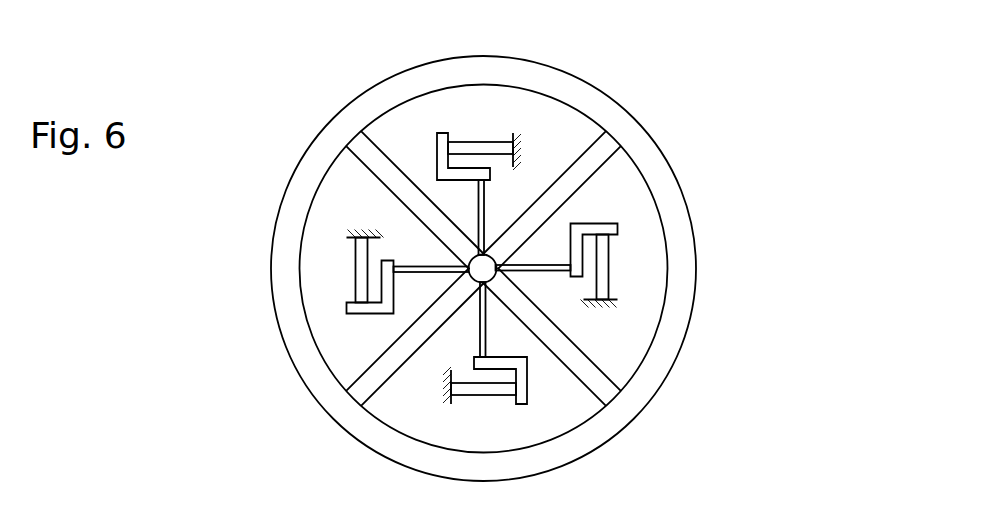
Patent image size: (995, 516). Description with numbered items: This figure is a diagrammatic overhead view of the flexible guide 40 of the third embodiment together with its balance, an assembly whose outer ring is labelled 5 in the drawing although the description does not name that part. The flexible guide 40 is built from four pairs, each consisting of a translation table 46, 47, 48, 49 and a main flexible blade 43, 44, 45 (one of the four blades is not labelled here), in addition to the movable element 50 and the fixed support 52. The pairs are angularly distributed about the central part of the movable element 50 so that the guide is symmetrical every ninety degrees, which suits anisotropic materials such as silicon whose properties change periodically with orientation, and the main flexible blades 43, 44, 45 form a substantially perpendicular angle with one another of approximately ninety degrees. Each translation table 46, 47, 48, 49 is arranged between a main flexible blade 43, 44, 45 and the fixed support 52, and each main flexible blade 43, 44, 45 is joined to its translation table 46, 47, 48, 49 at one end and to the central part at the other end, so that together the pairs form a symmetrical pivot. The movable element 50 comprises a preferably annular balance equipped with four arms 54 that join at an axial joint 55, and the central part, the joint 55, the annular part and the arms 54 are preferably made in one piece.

The annular ring 5 is at (465, 67).
The flexible guide 40 is at (278, 82).
The main flexible blade 43 is at (484, 193).
The main flexible blade 44 is at (417, 273).
The main flexible blade 45 is at (440, 401).
The translation table 46 is at (550, 270).
The translation table 47 is at (430, 130).
The translation table 48 is at (343, 285).
The translation table 49 is at (535, 407).
The movable element 50 is at (700, 123).
The fixed support 52 is at (522, 140).
The arms 54 is at (378, 167).
The axial joint 55 is at (490, 268).